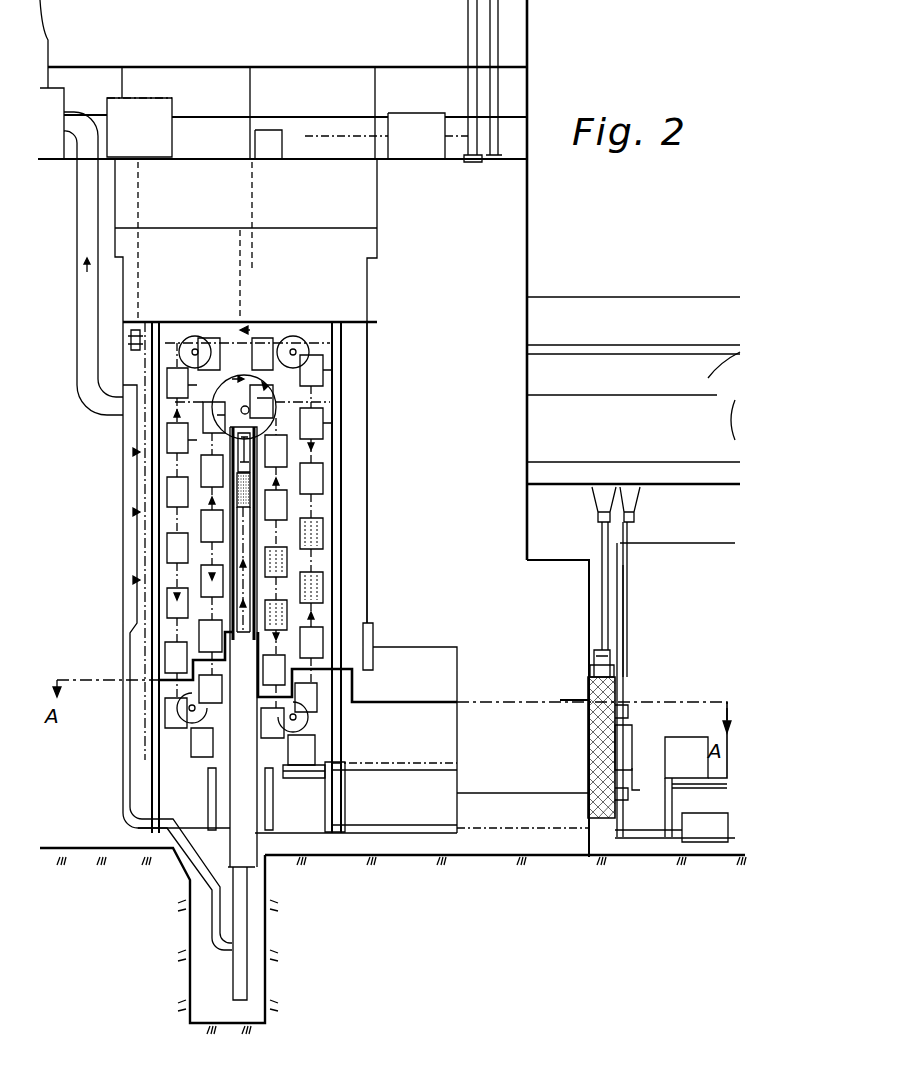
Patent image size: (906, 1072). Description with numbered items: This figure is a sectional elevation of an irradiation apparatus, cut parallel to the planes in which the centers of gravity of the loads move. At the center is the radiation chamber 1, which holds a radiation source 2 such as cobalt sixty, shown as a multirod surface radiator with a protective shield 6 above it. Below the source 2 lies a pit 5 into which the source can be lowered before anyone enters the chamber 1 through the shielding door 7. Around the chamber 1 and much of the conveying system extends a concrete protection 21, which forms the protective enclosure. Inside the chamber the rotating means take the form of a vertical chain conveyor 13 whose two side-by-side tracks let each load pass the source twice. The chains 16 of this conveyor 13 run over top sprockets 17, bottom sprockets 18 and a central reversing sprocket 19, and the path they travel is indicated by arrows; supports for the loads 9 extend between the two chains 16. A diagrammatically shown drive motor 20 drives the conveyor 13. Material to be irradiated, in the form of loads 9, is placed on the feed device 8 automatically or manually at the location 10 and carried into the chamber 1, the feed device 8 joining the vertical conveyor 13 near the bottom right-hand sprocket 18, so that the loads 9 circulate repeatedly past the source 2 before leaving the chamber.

The radiation chamber 1 is at (355, 416).
The radiation source 2 is at (243, 574).
The pit 5 is at (240, 912).
The protective shield 6 is at (249, 493).
The shielding door 7 is at (600, 738).
The feed device 8 is at (306, 772).
The loads 9 is at (170, 490).
The location 10 is at (686, 782).
The vertical chain conveyor 13 is at (158, 391).
The chains 16 is at (163, 520).
The top sprockets 17 is at (183, 338).
The bottom sprockets 18 is at (193, 720).
The central reversing sprocket 19 is at (262, 432).
The drive motor 20 is at (165, 106).
The concrete protection 21 is at (393, 596).